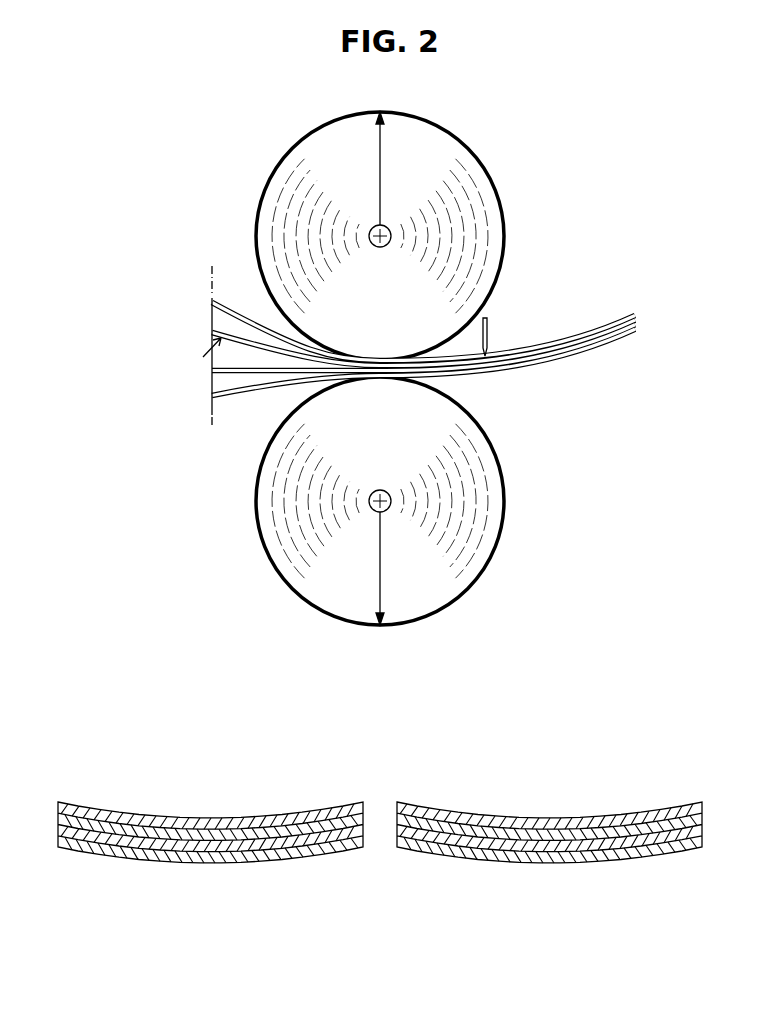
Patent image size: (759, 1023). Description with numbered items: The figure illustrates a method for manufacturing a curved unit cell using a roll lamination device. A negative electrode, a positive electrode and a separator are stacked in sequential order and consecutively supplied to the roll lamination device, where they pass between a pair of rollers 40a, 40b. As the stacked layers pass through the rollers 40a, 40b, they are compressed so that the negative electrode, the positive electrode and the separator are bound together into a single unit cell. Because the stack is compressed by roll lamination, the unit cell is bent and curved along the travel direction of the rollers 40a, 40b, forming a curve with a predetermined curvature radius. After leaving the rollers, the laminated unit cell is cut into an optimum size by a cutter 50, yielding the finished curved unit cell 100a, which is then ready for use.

The roller 40a is at (504, 219).
The roller 40b is at (504, 484).
The cutter 50 is at (488, 331).
The unit cell 100a is at (209, 801).